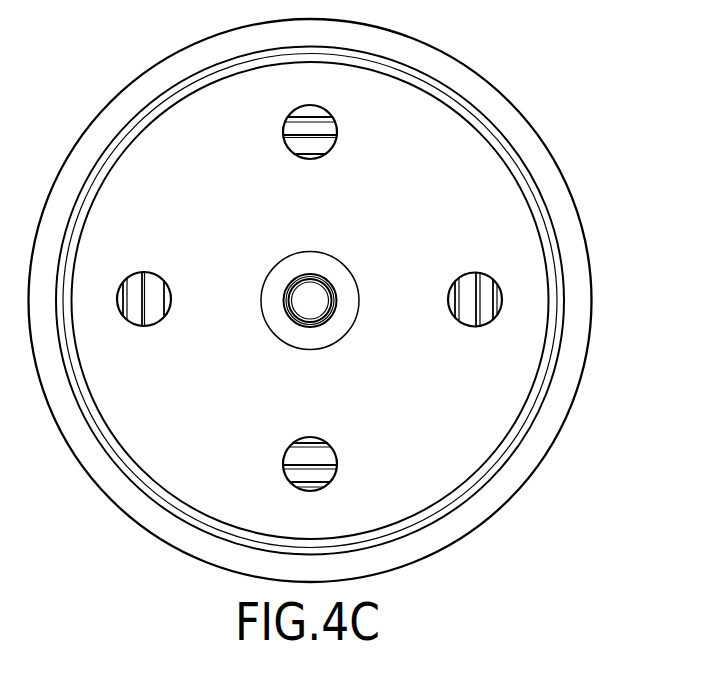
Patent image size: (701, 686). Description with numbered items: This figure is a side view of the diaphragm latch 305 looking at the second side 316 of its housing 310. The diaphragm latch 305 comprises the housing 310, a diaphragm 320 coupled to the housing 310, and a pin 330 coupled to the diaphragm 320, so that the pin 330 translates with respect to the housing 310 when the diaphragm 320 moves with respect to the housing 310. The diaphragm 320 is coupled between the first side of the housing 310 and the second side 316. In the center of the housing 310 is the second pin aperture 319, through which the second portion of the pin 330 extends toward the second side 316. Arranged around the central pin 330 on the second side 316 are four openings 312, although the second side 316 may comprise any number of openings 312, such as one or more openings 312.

The diaphragm latch 305 is at (522, 72).
The housing 310 is at (553, 158).
The opening 312 is at (337, 140).
The second side 316 is at (450, 210).
The second pin aperture 319 is at (295, 322).
The diaphragm 320 is at (477, 297).
The pin 330 is at (312, 295).